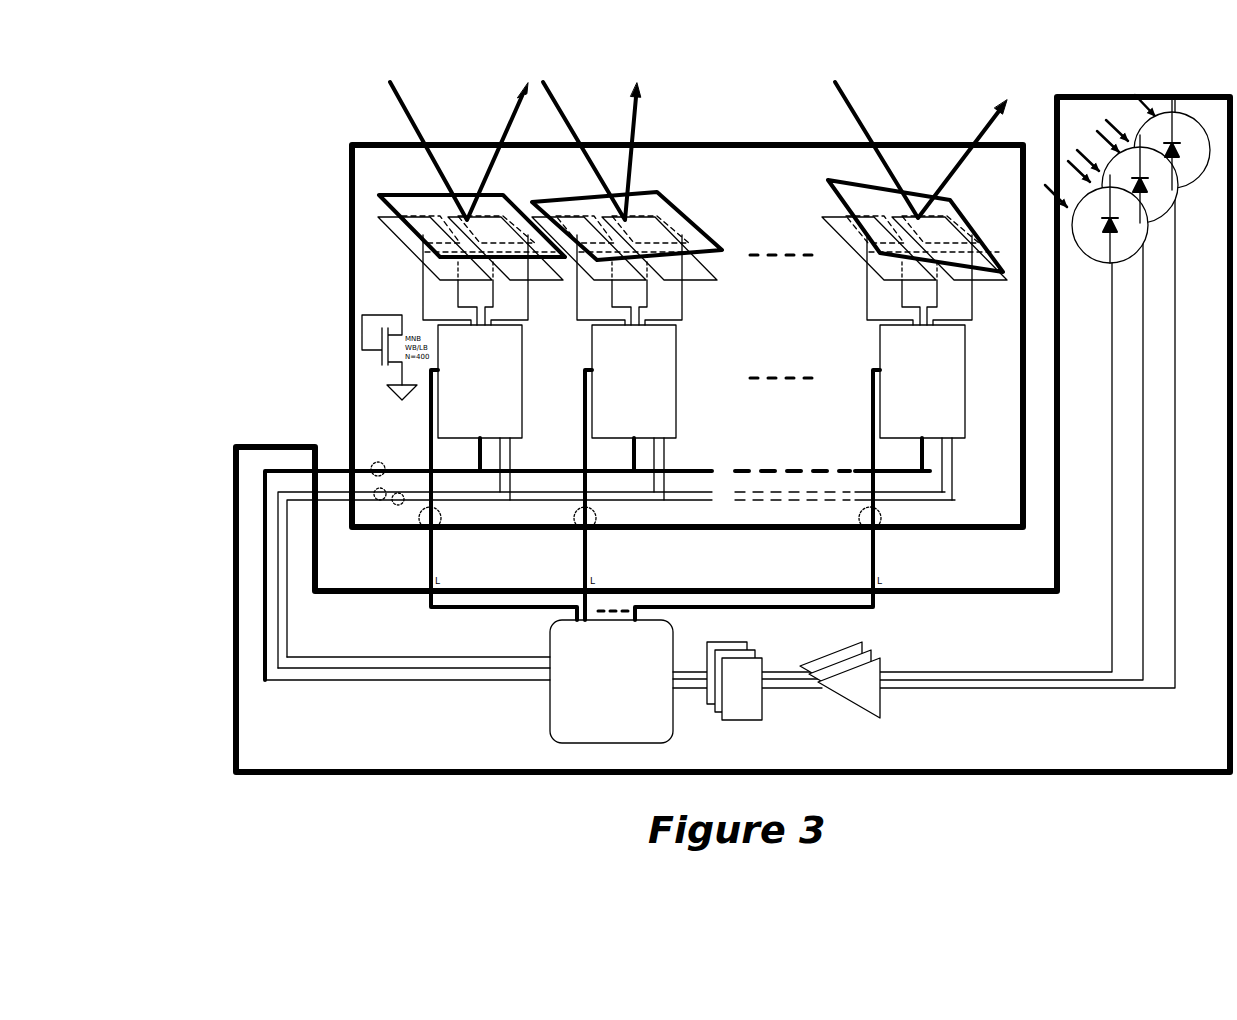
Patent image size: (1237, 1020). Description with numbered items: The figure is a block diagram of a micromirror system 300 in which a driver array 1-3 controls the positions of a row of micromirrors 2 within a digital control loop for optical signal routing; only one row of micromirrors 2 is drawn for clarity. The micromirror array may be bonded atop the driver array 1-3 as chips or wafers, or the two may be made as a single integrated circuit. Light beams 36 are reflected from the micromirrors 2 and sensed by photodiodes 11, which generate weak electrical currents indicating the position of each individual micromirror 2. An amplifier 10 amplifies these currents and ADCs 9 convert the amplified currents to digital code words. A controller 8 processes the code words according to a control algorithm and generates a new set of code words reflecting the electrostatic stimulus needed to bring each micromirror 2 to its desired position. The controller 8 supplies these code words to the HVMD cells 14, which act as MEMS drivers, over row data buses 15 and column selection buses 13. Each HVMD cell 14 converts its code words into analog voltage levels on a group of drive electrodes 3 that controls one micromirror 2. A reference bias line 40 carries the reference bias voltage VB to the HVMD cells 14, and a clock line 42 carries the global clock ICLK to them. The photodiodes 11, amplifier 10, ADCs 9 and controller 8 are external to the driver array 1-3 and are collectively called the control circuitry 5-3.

The micromirror system 300 is at (228, 127).
The driver array 1-3 is at (750, 145).
The micromirror 2 is at (418, 194).
The drive electrode 3 is at (545, 280).
The control circuitry 5-3 is at (285, 445).
The controller 8 is at (562, 722).
The ADC 9 is at (735, 722).
The amplifier 10 is at (846, 690).
The photodiode 11 is at (1193, 180).
The column selection bus 13 is at (440, 524).
The HVMD cell 14 is at (518, 430).
The row data bus 15 is at (372, 463).
The light beam 36 is at (408, 115).
The reference bias line 40 is at (398, 507).
The clock line 42 is at (379, 502).